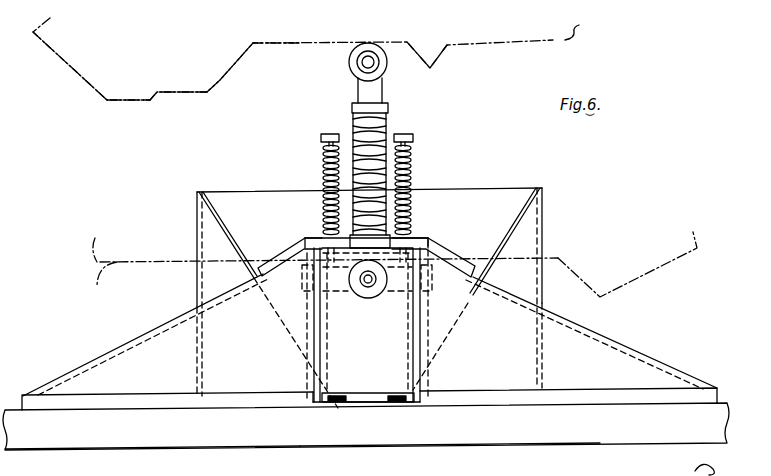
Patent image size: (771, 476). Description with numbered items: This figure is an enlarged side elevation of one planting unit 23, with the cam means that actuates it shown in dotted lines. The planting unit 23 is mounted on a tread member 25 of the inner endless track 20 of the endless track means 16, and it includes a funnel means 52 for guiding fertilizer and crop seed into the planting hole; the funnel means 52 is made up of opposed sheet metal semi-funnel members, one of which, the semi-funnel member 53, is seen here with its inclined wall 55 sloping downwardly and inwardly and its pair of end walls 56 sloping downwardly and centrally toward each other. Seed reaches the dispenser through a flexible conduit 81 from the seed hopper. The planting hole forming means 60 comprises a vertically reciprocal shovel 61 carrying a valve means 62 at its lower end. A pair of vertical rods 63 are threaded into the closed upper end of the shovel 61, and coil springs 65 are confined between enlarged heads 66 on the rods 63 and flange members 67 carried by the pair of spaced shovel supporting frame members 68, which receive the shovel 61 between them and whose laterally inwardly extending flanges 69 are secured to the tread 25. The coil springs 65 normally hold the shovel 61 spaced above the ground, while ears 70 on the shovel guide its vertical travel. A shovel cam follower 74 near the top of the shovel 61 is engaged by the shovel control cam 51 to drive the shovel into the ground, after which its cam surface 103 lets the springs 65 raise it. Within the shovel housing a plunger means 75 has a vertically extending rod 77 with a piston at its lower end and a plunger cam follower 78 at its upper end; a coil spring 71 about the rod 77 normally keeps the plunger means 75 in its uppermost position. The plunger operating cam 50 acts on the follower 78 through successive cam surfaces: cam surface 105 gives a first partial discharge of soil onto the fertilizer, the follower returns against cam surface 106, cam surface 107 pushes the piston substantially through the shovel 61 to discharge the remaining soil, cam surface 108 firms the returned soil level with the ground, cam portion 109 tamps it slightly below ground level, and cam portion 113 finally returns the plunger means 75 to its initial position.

The endless track means 16 is at (532, 445).
The inner endless track 20 is at (446, 447).
The tread member 25 is at (163, 448).
The planting unit 23 is at (472, 163).
The plunger operating cam 50 is at (557, 42).
The shovel control cam 51 is at (680, 234).
The funnel means 52 is at (195, 187).
The semi-funnel member 53 is at (530, 226).
The inclined wall 55 is at (470, 191).
The end walls 56 is at (218, 228).
The planting hole forming means 60 is at (310, 415).
The shovel 61 is at (334, 357).
The valve means 62 is at (352, 414).
The rods 63 is at (322, 150).
The coil springs 65 is at (323, 172).
The enlarged heads 66 is at (327, 132).
The flange members 67 is at (293, 248).
The shovel supporting frame members 68 is at (138, 338).
The flanges 69 is at (672, 396).
The ears 70 is at (306, 282).
The coil spring 71 is at (382, 133).
The shovel cam follower 74 is at (361, 295).
The plunger means 75 is at (379, 145).
The rod 77 is at (356, 122).
The plunger cam follower 78 is at (350, 63).
The flexible conduit 81 is at (690, 471).
The cam surface 103 is at (97, 287).
The cam surface 105 is at (447, 58).
The cam surface 106 is at (305, 37).
The cam surface 107 is at (230, 78).
The cam surface 108 is at (177, 93).
The cam portion 109 is at (127, 102).
The cam portion 113 is at (80, 80).